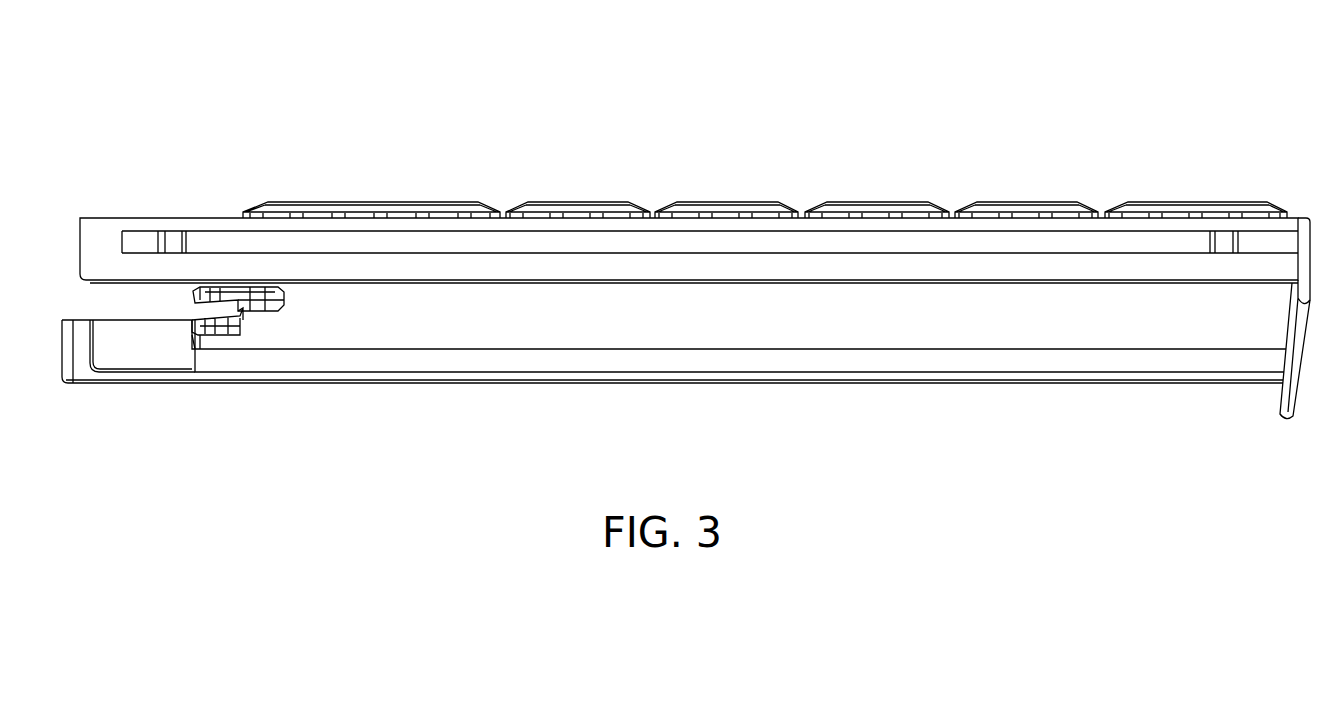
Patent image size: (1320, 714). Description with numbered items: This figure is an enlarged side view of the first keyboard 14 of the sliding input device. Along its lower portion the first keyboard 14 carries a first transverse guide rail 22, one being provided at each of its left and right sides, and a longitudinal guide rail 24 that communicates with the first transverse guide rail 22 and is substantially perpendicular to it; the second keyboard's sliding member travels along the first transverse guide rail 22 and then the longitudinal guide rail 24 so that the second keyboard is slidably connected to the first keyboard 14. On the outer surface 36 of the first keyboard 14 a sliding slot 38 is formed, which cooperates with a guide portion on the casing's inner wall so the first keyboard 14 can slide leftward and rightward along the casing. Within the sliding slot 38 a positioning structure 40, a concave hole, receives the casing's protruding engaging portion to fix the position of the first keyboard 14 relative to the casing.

The first keyboard 14 is at (735, 105).
The first transverse guide rail 22 is at (440, 376).
The longitudinal guide rail 24 is at (83, 333).
The outer surface 36 is at (1104, 226).
The sliding slot 38 is at (878, 243).
The positioning structure 40 is at (1224, 241).